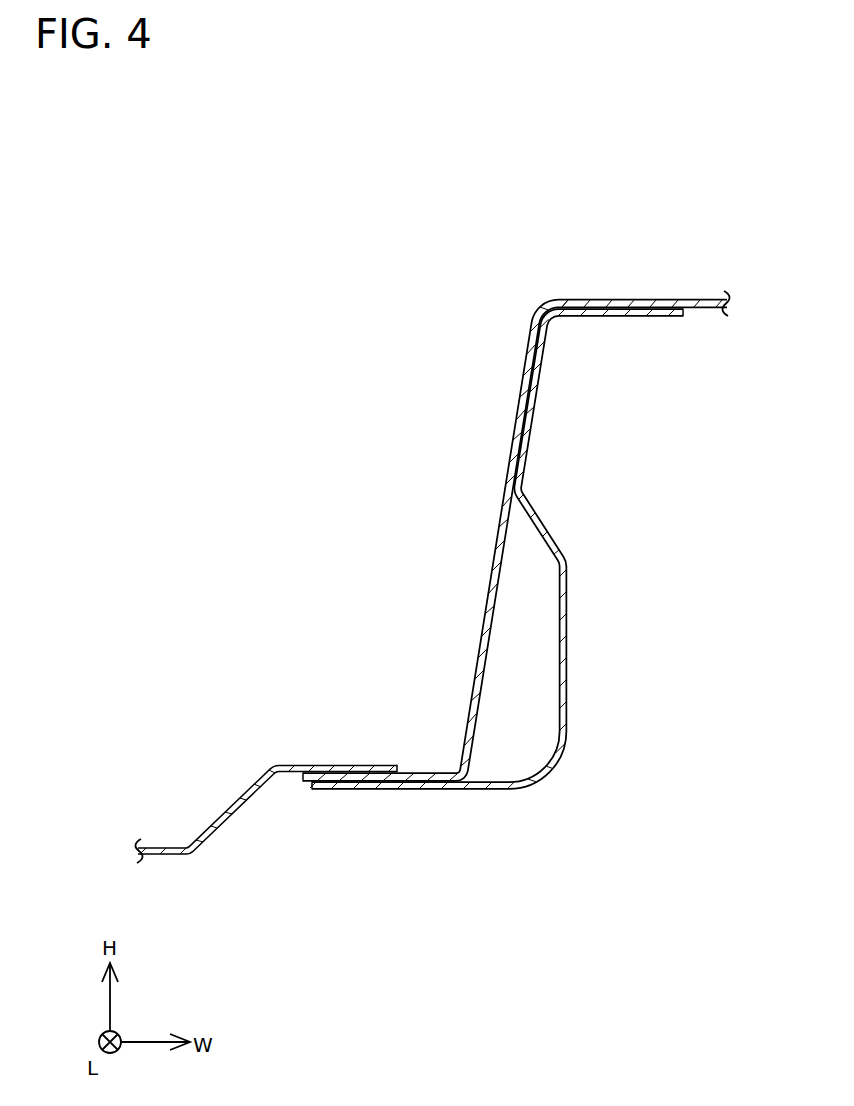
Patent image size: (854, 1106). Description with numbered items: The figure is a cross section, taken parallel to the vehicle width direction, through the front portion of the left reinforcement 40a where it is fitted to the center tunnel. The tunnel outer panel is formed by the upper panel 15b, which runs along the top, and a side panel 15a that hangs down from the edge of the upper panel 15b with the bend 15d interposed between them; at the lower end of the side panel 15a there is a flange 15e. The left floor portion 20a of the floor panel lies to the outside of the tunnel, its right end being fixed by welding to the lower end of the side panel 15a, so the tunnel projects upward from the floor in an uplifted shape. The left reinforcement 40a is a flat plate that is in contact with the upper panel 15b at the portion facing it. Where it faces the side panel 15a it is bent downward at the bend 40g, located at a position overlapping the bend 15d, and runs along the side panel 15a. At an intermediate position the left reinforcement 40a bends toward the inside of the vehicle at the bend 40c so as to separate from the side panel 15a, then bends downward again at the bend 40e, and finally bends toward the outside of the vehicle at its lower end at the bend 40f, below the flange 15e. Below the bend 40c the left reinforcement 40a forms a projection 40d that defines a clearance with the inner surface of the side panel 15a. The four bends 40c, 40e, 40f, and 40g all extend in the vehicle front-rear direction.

The side panel 15a is at (497, 543).
The upper panel 15b is at (644, 299).
The bend 15d is at (541, 302).
The flange 15e is at (418, 772).
The left floor portion 20a is at (222, 810).
The left reinforcement 40a is at (646, 319).
The bend 40c is at (527, 489).
The projection 40d is at (572, 664).
The bend 40e is at (571, 581).
The bend 40f is at (553, 772).
The bend 40g is at (566, 325).